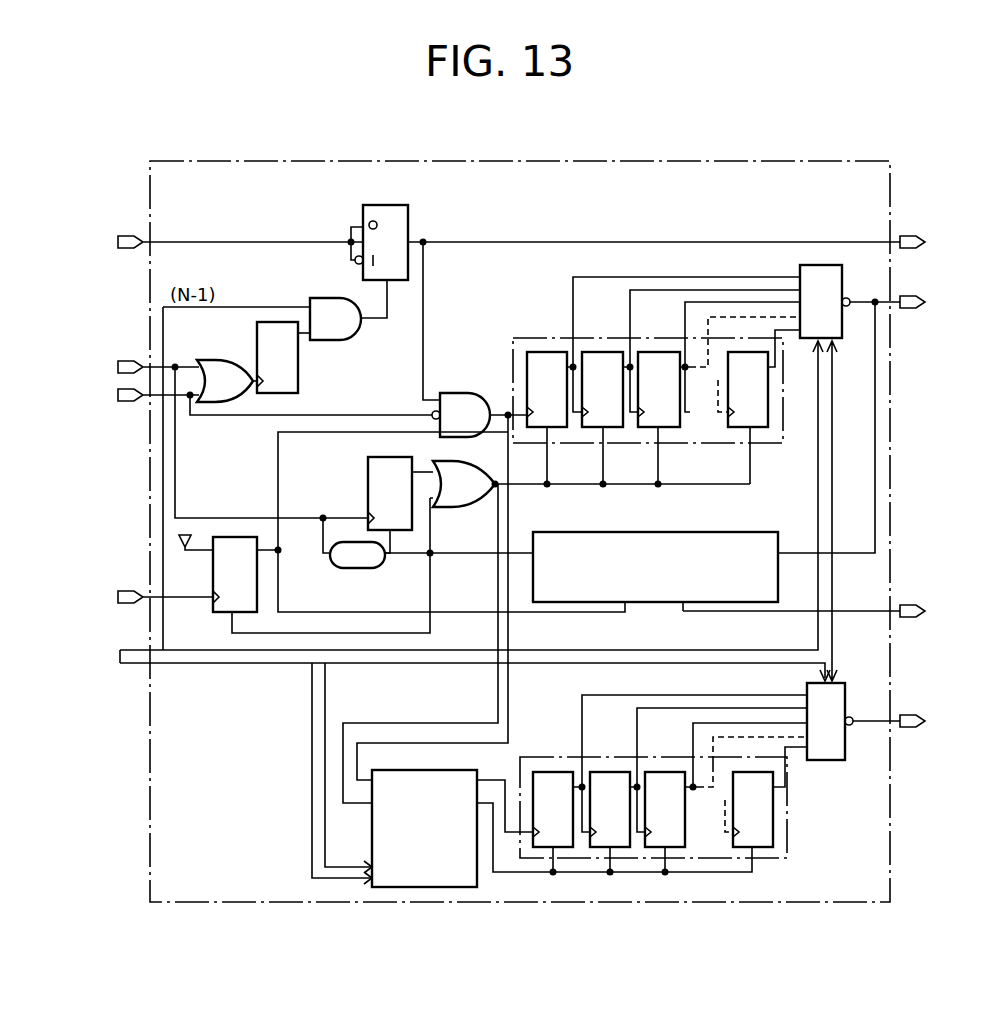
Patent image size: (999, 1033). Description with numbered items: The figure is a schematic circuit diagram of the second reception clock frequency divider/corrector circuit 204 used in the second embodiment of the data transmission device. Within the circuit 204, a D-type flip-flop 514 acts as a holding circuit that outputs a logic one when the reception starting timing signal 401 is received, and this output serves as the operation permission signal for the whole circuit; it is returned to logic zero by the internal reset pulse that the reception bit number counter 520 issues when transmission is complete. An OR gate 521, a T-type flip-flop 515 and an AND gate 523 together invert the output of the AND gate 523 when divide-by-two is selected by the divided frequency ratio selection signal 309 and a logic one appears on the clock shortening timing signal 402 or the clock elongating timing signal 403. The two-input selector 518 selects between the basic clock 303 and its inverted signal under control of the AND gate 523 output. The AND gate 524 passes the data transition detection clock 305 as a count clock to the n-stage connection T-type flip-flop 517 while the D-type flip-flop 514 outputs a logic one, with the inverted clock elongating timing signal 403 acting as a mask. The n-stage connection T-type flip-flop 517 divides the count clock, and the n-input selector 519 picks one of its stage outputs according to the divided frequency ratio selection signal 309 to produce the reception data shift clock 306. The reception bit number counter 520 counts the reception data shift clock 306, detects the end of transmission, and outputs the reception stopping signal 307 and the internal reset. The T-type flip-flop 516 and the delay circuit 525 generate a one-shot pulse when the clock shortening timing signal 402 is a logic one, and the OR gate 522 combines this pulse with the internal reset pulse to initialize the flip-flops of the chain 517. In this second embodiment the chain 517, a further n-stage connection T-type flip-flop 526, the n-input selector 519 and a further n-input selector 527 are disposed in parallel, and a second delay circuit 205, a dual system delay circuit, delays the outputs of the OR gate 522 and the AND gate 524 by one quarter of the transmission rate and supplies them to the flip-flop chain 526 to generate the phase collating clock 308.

The second reception clock frequency divider/corrector circuit 204 is at (513, 161).
The second delay circuit 205 is at (428, 770).
The basic clock 303 is at (211, 243).
The data transition detection clock 305 is at (696, 243).
The reception data shift clock 306 is at (913, 303).
The reception stopping signal 307 is at (834, 612).
The phase collating clock 308 is at (915, 722).
The divided frequency ratio selection signal 309 is at (446, 511).
The reception starting timing signal 401 is at (136, 598).
The clock shortening timing signal 402 is at (129, 368).
The clock elongating timing signal 403 is at (129, 396).
The D-type flip-flop 514 is at (235, 537).
The T-type flip-flop 515 is at (298, 372).
The T-type flip-flop 516 is at (368, 468).
The n-stage connection T-type flip-flop 517 is at (533, 339).
The 2-input selector 518 is at (408, 214).
The n-input selector 519 is at (805, 265).
The reception bit number counter 520 is at (672, 532).
The OR gate 521 is at (213, 360).
The OR gate 522 is at (480, 497).
The AND gate 523 is at (334, 298).
The AND gate 524 is at (457, 393).
The delay circuit 525 is at (360, 569).
The n-stage connection T-type flip-flop 526 is at (545, 757).
The n-input selector 527 is at (835, 760).